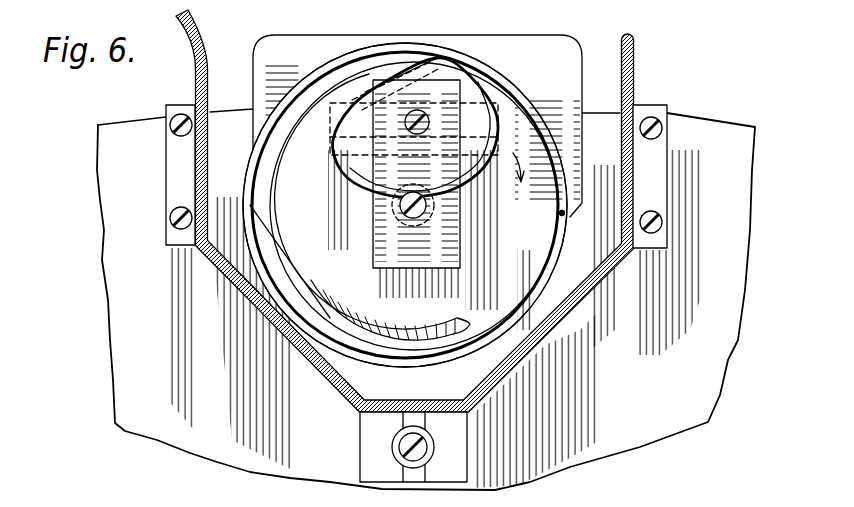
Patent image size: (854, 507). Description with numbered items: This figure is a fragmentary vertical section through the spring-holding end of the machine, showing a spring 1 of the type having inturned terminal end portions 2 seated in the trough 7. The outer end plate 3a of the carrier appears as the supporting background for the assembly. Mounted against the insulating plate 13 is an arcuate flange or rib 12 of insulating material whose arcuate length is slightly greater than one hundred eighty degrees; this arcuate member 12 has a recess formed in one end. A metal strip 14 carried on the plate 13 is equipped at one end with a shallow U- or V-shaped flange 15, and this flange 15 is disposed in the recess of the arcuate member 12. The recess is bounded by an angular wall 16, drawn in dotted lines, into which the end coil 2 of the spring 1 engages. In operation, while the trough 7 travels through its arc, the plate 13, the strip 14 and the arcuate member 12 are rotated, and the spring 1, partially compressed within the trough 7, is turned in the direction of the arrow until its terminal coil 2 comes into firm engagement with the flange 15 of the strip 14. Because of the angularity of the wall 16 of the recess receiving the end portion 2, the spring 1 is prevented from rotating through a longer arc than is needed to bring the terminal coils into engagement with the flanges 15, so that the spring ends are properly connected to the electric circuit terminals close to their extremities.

The spring 1 is at (250, 162).
The inturned terminal end portion 2 is at (462, 100).
The outer end plate 3a is at (724, 124).
The trough 7 is at (646, 57).
The arcuate flange or rib 12 is at (404, 206).
The plate 13 is at (277, 191).
The metal strip 14 is at (452, 203).
The flange 15 is at (404, 62).
The angular wall 16 is at (366, 98).